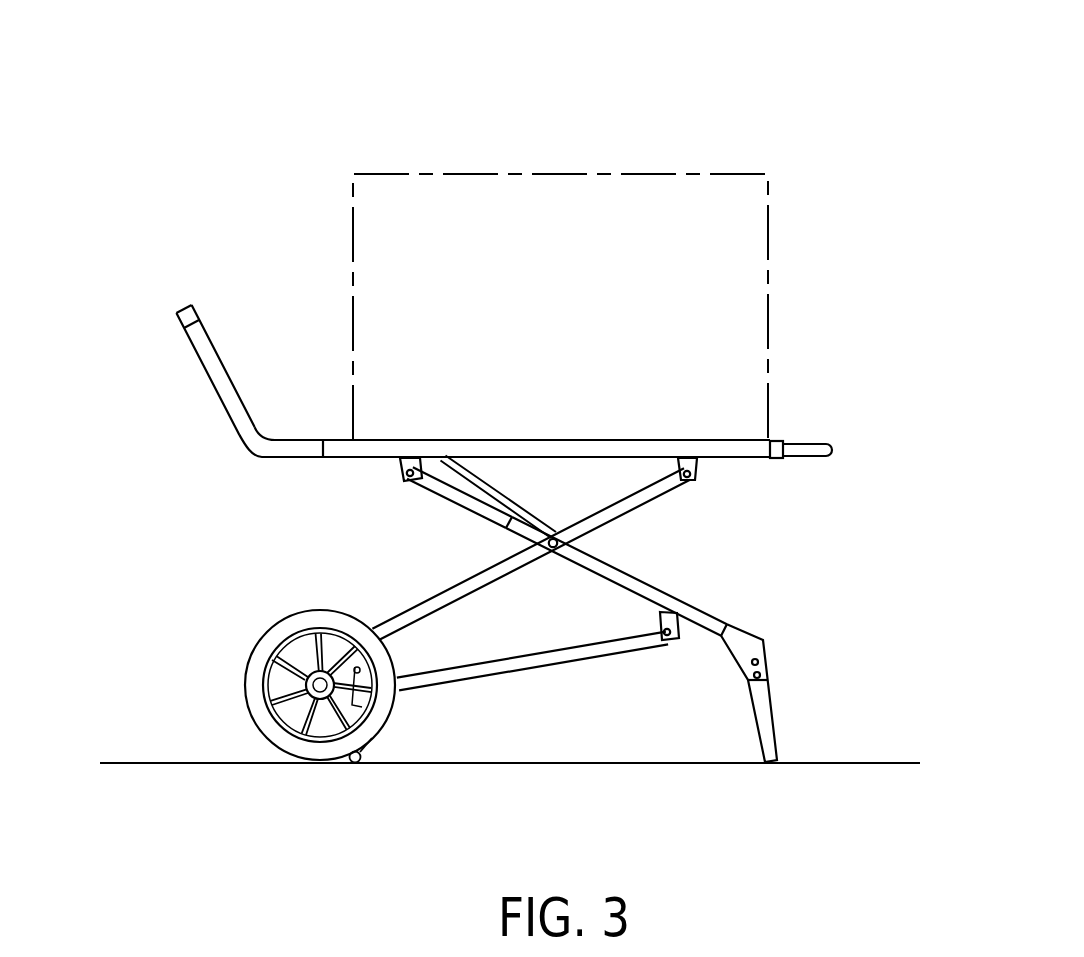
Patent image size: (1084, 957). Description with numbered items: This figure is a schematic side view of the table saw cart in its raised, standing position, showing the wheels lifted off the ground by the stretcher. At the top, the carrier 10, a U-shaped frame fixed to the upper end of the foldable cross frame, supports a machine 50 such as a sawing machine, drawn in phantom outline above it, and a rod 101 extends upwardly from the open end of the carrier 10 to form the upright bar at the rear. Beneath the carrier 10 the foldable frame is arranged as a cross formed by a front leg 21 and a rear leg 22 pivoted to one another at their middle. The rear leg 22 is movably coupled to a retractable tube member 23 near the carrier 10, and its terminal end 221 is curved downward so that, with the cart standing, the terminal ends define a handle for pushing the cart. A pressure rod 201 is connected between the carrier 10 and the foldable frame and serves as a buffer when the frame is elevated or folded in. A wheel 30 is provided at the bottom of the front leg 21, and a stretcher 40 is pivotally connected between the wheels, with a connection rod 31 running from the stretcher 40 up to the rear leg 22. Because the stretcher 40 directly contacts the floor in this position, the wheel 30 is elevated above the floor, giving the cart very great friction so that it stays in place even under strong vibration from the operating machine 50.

The carrier 10 is at (729, 434).
The rod 101 is at (208, 374).
The pressure rod 201 is at (497, 498).
The front leg 21 is at (460, 590).
The rear leg 22 is at (643, 585).
The terminal end 221 is at (765, 712).
The retractable tube member 23 is at (442, 487).
The wheel 30 is at (250, 660).
The connection rod 31 is at (545, 652).
The stretcher 40 is at (363, 765).
The machine 50 is at (610, 160).